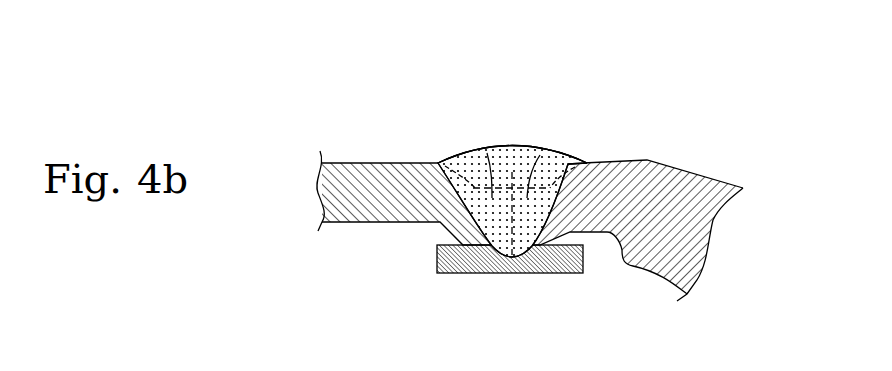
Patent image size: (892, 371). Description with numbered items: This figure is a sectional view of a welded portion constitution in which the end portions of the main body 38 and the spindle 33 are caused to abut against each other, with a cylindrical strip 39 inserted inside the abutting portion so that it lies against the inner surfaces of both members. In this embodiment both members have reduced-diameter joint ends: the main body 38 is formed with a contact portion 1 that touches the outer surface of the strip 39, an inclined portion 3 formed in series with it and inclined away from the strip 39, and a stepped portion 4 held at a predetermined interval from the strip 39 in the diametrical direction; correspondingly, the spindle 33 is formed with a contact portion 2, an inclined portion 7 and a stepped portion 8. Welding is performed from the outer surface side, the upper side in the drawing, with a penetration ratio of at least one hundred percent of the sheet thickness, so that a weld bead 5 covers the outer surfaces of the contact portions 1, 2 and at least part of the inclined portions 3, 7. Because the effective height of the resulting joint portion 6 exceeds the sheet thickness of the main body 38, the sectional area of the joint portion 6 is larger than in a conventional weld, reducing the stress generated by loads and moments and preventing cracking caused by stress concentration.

The main body 38 is at (348, 150).
The spindle 33 is at (675, 163).
The cylindrical strip 39 is at (570, 263).
The joint portion 6 is at (511, 80).
The stepped portion 4 is at (397, 162).
The stepped portion 8 is at (597, 178).
The contact portion 1 is at (487, 153).
The contact portion 2 is at (540, 155).
The inclined portion 3 is at (460, 158).
The weld bead 5 is at (508, 146).
The inclined portion 7 is at (566, 158).